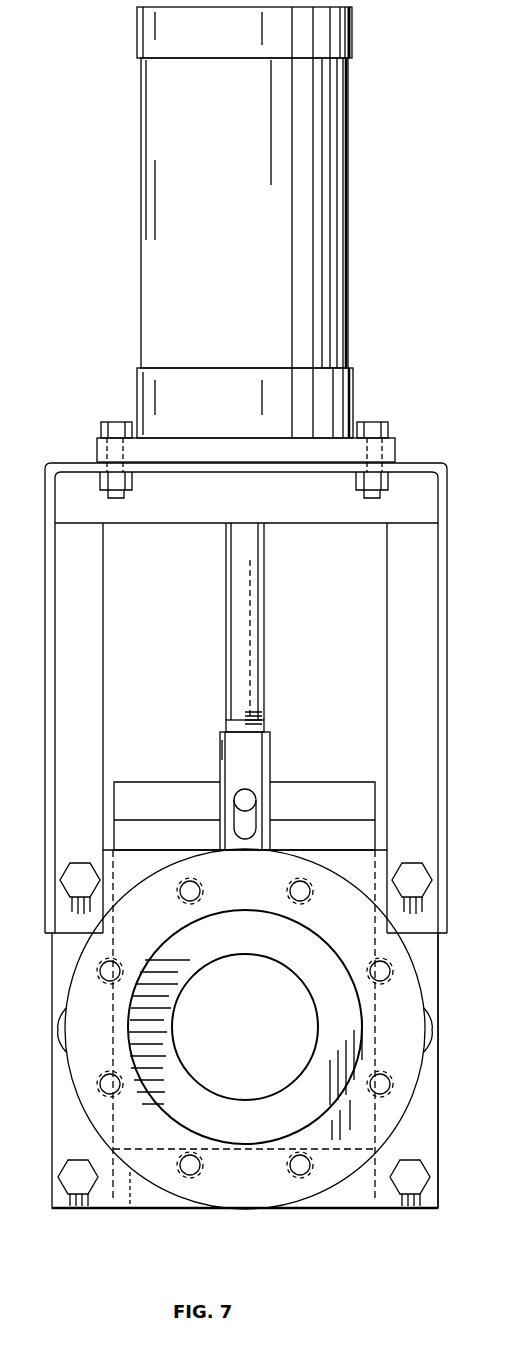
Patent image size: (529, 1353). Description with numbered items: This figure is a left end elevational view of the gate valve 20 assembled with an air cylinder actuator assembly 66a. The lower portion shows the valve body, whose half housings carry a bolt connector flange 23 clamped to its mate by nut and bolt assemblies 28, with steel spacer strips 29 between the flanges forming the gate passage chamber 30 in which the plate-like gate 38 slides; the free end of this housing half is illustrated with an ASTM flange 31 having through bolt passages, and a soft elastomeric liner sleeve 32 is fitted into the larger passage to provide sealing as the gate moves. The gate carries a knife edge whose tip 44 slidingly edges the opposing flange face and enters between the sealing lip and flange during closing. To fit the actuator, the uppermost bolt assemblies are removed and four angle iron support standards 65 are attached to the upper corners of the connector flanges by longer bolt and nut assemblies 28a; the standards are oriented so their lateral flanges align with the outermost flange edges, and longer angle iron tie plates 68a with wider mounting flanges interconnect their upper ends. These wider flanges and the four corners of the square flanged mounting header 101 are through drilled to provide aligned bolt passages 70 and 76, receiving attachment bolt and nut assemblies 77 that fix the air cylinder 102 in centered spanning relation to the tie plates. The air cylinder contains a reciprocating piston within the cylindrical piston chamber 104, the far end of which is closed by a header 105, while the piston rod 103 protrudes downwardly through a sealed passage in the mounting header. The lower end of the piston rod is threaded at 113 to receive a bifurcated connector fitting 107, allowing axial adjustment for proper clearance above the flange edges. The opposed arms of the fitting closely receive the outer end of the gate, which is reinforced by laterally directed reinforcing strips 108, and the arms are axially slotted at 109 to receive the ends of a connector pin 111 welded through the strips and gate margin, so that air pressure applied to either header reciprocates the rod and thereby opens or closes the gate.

The gate valve 20 is at (361, 1205).
The bolt connector flange 23 is at (428, 956).
The nut and bolt assemblies 28 is at (432, 1026).
The longer bolt and nut assemblies 28a is at (80, 863).
The steel spacer strips 29 is at (109, 1210).
The gate passage chamber 30 is at (120, 1195).
The ASTM flange 31 is at (313, 1185).
The liner sleeve 32 is at (178, 1107).
The plate-like gate 38 is at (337, 840).
The knife edge tip 44 is at (262, 1150).
The angle iron support standards 65 is at (97, 640).
The air cylinder actuator assembly 66a is at (413, 460).
The angle iron tie plates 68a is at (301, 520).
The bolt passages 70 is at (135, 482).
The bolt passages 76 is at (100, 450).
The attachment bolt and nut assemblies 77 is at (114, 422).
The square flanged mounting header 101 is at (353, 378).
The air cylinder 102 is at (336, 217).
The piston rod 103 is at (265, 582).
The cylindrical piston chamber 104 is at (236, 170).
The header 105 is at (160, 32).
The bifurcated connector fitting 107 is at (268, 734).
The reinforcing strips 108 is at (150, 782).
The axial slots 109 is at (257, 822).
The connector pin 111 is at (250, 795).
The threaded end 113 is at (240, 718).